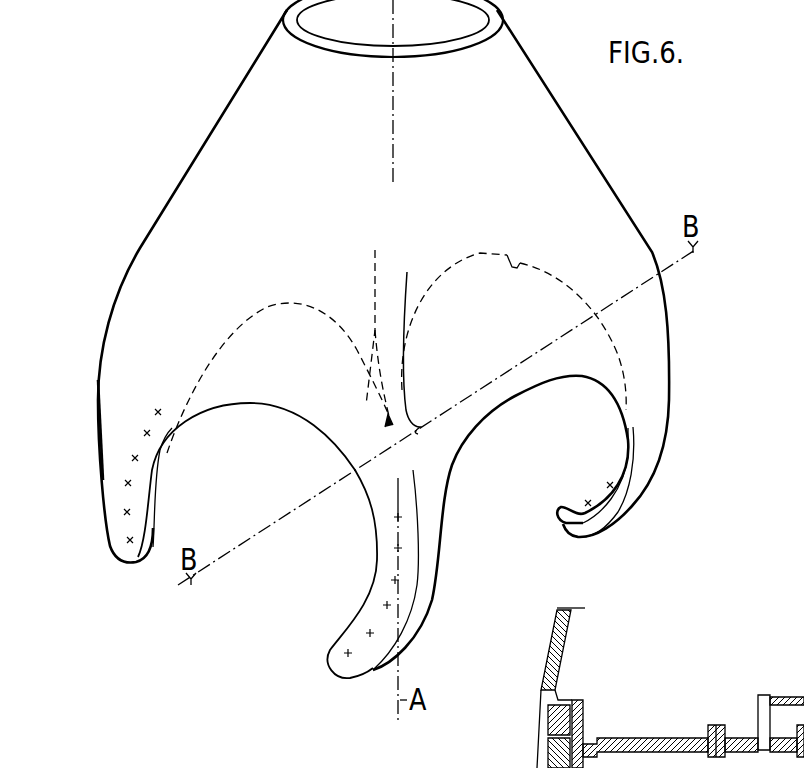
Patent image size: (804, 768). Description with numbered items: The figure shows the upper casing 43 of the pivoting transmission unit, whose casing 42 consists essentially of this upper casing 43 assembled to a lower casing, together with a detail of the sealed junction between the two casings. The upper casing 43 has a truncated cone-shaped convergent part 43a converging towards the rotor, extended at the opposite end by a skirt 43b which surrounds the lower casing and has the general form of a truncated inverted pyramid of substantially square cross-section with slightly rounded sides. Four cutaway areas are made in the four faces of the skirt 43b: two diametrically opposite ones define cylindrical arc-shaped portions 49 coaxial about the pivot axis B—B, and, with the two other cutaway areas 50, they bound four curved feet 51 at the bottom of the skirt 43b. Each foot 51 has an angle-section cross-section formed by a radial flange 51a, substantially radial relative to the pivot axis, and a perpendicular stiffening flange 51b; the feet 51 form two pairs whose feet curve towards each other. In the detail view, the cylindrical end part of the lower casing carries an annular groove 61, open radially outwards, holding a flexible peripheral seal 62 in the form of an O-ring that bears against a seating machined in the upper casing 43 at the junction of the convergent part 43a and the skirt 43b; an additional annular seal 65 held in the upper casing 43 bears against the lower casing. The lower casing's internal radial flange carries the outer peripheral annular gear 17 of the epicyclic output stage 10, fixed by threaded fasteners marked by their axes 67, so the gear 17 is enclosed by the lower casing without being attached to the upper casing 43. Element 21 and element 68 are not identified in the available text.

In FIG. 6, the upper casing 43 is at (560, 181).
In FIG. 6, the truncated cone-shaped convergent part 43a is at (527, 43).
In FIG. 7, the truncated cone-shaped convergent part 43a is at (560, 623).
In FIG. 6, the skirt 43b is at (130, 390).
In FIG. 6, the cylindrical arc-shaped portion 49 is at (513, 268).
In FIG. 6, the cutaway area 50 is at (257, 328).
In FIG. 6, the foot 51 is at (375, 442).
In FIG. 6, the radial flange 51a is at (442, 440).
In FIG. 6, the stiffening flange 51b is at (386, 418).
In FIG. 7, the output module or stage 10 is at (742, 727).
In FIG. 7, the outer peripheral annular gear 17 is at (645, 739).
In FIG. 7, the ring 21 is at (803, 700).
In FIG. 7, the casing 42 is at (541, 688).
In FIG. 7, the annular groove 61 is at (547, 732).
In FIG. 7, the flexible peripheral seal 62 is at (545, 753).
In FIG. 7, the annular seal 65 is at (566, 703).
In FIG. 7, the axes of threaded fasteners 67 is at (609, 767).
In FIG. 7, the retaining ring 68 is at (650, 767).